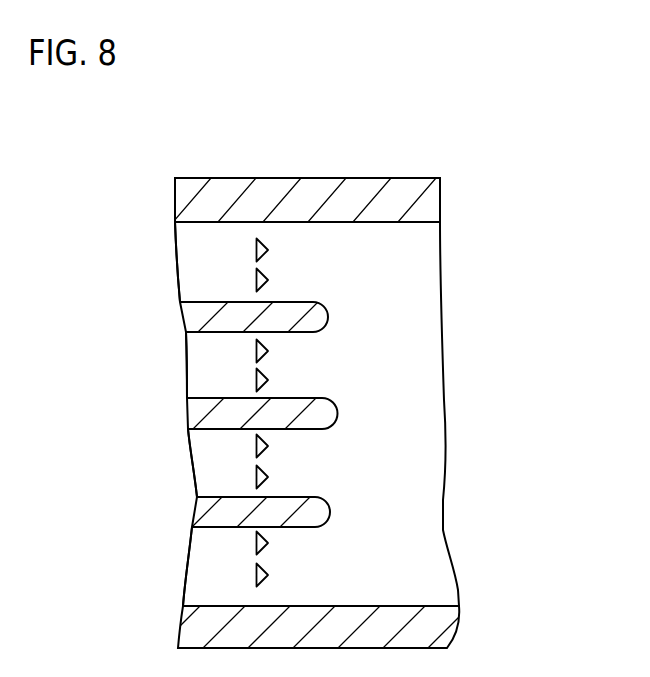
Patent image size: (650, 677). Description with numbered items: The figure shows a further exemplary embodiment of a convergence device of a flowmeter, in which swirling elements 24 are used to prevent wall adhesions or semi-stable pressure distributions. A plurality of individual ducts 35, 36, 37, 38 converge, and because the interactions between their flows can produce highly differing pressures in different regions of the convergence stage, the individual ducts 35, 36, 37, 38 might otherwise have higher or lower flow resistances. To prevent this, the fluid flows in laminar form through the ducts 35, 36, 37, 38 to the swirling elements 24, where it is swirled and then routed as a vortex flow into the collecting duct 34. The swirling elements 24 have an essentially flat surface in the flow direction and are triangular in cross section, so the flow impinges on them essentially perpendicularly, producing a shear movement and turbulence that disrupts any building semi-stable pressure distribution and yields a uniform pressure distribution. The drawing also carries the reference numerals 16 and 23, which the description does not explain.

The wall 16 is at (393, 208).
The baffle 23 is at (283, 313).
The swirling element 24 is at (260, 242).
The collecting duct 34 is at (418, 447).
The duct 35 is at (202, 263).
The duct 36 is at (202, 368).
The duct 37 is at (202, 466).
The duct 38 is at (202, 563).